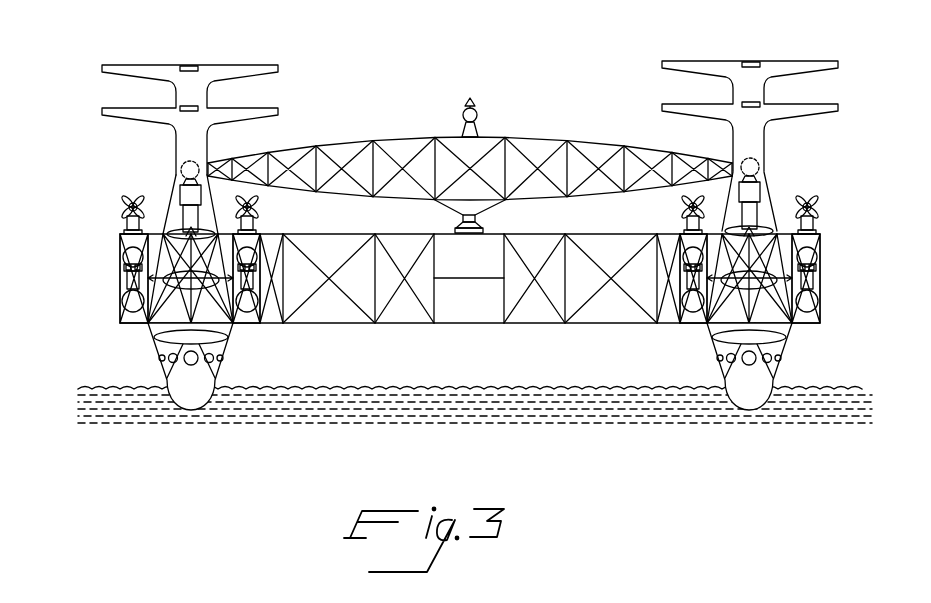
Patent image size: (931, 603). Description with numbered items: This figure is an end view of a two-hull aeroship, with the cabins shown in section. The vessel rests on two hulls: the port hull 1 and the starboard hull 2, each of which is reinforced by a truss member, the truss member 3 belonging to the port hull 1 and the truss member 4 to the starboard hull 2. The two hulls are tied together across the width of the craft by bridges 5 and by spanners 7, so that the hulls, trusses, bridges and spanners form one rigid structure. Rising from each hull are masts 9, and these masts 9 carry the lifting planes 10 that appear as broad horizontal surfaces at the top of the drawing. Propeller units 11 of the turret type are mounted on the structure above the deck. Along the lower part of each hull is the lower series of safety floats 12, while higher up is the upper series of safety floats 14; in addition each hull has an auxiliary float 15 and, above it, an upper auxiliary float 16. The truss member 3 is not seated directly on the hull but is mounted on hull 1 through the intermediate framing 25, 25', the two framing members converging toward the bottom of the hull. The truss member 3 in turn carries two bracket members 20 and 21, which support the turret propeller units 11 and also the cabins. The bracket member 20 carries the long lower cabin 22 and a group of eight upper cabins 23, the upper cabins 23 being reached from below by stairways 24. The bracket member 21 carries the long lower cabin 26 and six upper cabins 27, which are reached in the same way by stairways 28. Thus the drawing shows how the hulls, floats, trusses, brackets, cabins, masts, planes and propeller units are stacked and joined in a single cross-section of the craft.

The port hull 1 is at (758, 414).
The starboard hull 2 is at (184, 414).
The truss member 3 is at (793, 236).
The truss member 4 is at (155, 233).
The bridge 5 is at (345, 325).
The spanner 7 is at (328, 144).
The mast 9 is at (197, 64).
The lifting plane 10 is at (233, 66).
The propeller unit 11 is at (123, 202).
The lower series of safety floats 12 is at (160, 357).
The upper series of safety floats 14 is at (160, 336).
The auxiliary float 15 is at (235, 323).
The upper auxiliary float 16 is at (232, 240).
The bracket member 20 is at (124, 246).
The bracket member 21 is at (260, 260).
The long lower cabin 22 is at (121, 304).
The upper cabin 23 is at (121, 259).
The stairway 24 is at (120, 280).
The intermediate framing 25 is at (470, 364).
The intermediate framing 25' is at (470, 364).
The long lower cabin 26 is at (262, 325).
The upper cabin 27 is at (262, 256).
The stairway 28 is at (262, 280).